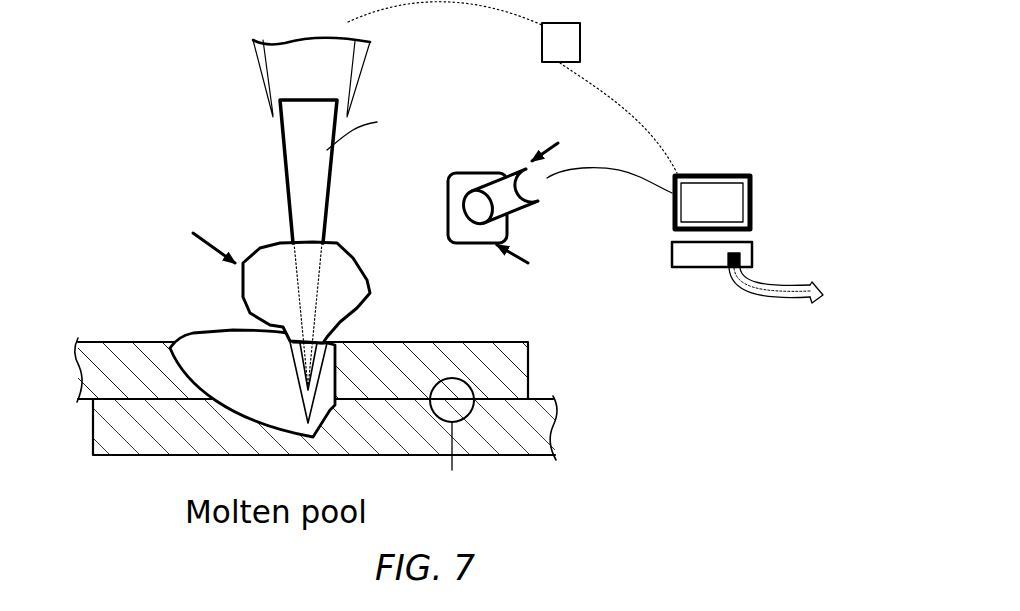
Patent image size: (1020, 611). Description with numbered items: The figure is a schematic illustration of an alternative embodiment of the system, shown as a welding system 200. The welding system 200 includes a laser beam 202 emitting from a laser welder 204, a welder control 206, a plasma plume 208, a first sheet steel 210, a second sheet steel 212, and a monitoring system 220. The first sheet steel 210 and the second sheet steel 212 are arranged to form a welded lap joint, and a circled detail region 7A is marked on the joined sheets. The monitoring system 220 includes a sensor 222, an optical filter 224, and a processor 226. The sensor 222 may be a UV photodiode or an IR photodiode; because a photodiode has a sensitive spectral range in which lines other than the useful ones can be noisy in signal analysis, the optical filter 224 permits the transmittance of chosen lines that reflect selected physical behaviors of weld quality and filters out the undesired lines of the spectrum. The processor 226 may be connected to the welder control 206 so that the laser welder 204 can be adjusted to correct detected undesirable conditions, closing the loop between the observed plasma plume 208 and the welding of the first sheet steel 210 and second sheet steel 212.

The welding system 200 is at (652, 100).
The laser beam 202 is at (288, 124).
The laser welder 204 is at (368, 65).
The welder control 206 is at (580, 40).
The plasma plume 208 is at (259, 250).
The first sheet steel 210 is at (127, 357).
The second sheet steel 212 is at (133, 447).
The monitoring system 220 is at (729, 146).
The sensor 222 is at (548, 188).
The optical filter 224 is at (507, 230).
The processor 226 is at (772, 234).
The detail view 7A is at (452, 440).